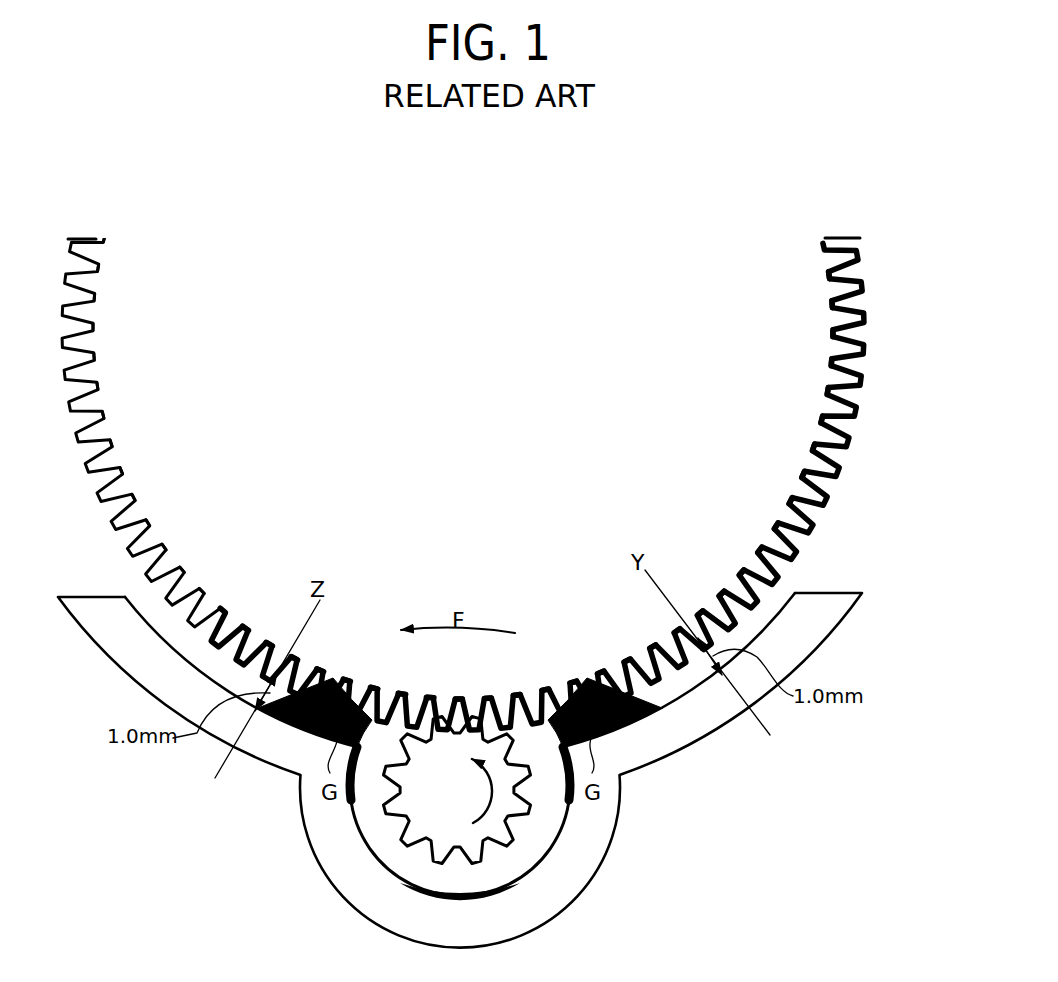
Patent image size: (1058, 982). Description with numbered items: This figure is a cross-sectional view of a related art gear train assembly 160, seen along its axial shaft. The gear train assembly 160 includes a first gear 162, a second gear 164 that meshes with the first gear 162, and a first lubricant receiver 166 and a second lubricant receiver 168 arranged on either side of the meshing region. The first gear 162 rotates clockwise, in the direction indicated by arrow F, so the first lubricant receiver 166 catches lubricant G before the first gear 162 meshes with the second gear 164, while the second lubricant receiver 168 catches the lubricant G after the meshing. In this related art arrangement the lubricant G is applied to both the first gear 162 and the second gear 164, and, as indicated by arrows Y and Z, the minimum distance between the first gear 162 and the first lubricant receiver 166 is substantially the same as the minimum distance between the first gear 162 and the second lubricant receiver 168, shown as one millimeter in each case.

The gear train assembly 160 is at (849, 648).
The first gear 162 is at (787, 415).
The second gear 164 is at (497, 827).
The first lubricant receiver 166 is at (783, 600).
The second lubricant receiver 168 is at (143, 612).